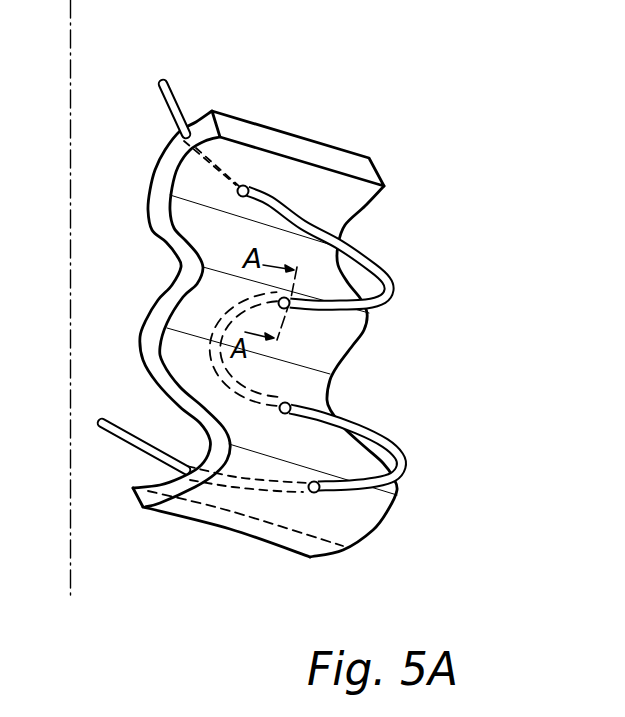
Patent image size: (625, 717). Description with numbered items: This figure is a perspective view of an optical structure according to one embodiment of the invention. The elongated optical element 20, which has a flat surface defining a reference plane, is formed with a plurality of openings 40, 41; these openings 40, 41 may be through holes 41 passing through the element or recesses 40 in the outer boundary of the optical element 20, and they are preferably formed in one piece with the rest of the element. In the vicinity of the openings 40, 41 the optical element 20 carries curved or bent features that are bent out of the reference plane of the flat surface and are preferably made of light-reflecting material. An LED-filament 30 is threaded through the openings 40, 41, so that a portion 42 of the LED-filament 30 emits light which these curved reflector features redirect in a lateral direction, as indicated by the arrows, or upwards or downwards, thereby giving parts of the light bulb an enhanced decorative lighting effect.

The optical element 20 is at (376, 165).
The LED-filament 30 is at (172, 122).
The recesses 40 is at (366, 328).
The through holes 41 is at (309, 304).
The portion of the LED-filament 42 is at (297, 220).